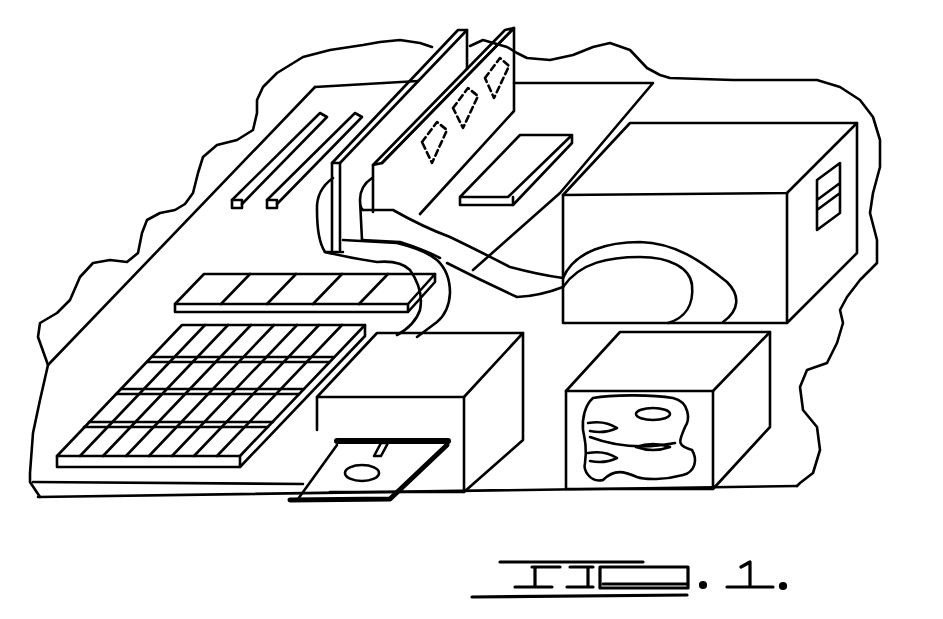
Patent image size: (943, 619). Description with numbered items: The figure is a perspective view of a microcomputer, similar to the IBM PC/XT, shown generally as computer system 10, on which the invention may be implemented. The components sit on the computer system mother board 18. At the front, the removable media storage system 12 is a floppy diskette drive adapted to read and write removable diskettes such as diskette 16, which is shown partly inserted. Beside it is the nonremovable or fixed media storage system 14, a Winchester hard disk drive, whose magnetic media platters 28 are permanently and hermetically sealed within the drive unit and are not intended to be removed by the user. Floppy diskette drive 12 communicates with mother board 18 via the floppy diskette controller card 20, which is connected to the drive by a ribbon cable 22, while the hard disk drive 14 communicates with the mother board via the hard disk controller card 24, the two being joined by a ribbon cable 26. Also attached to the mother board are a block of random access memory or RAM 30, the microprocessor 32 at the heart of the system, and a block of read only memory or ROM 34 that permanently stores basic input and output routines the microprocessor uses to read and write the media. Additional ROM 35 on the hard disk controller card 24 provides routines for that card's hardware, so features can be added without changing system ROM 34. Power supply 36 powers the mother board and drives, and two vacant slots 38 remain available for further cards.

The computer system 10 is at (150, 503).
The removable media storage system 12 is at (442, 482).
The nonremovable or fixed media storage system 14 is at (737, 460).
The diskette 16 is at (348, 488).
The mother board 18 is at (147, 287).
The floppy diskette controller card 20 is at (430, 82).
The ribbon cable 22 is at (332, 169).
The hard disk controller card 24 is at (479, 108).
The ribbon cable 26 is at (527, 275).
The magnetic media platters 28 is at (660, 430).
The random access memory (RAM) 30 is at (140, 378).
The microprocessor 32 is at (572, 128).
The read only memory (ROM) 34 is at (197, 285).
The additional ROM 35 is at (516, 94).
The power supply 36 is at (710, 137).
The vacant slots 38 is at (345, 117).